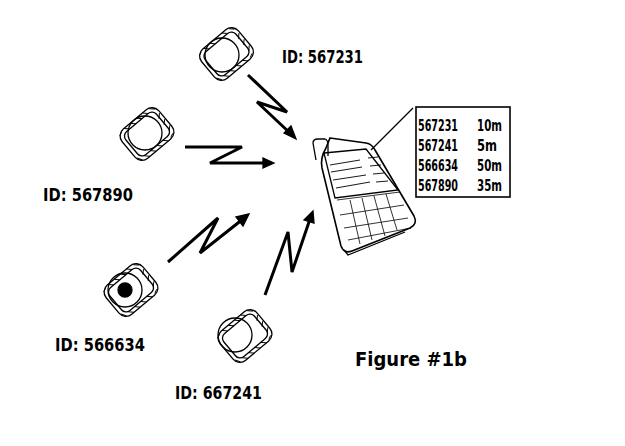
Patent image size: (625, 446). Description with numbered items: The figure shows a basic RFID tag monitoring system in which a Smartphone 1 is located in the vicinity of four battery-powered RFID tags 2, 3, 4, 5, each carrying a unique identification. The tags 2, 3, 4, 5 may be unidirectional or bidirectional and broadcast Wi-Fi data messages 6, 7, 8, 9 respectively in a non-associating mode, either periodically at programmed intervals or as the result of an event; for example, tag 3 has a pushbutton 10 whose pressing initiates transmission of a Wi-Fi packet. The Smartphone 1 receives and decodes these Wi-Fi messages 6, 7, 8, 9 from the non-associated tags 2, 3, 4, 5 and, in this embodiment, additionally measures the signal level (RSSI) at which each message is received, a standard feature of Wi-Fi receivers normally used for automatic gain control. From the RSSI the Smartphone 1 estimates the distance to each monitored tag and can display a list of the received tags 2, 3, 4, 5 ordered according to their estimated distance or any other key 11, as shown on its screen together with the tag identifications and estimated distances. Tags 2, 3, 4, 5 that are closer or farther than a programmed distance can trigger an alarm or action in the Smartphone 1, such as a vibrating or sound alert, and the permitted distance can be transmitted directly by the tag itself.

The Smartphone 1 is at (381, 247).
The RFID tag 2 is at (247, 336).
The RFID tag 3 is at (118, 299).
The RFID tag 4 is at (138, 132).
The RFID tag 5 is at (214, 52).
The Wi-Fi data message 6 is at (303, 247).
The Wi-Fi data message 7 is at (188, 253).
The Wi-Fi data message 8 is at (210, 150).
The Wi-Fi data message 9 is at (270, 98).
The pushbutton 10 is at (118, 277).
The list of received tags by estimated distance or other key 11 is at (343, 143).